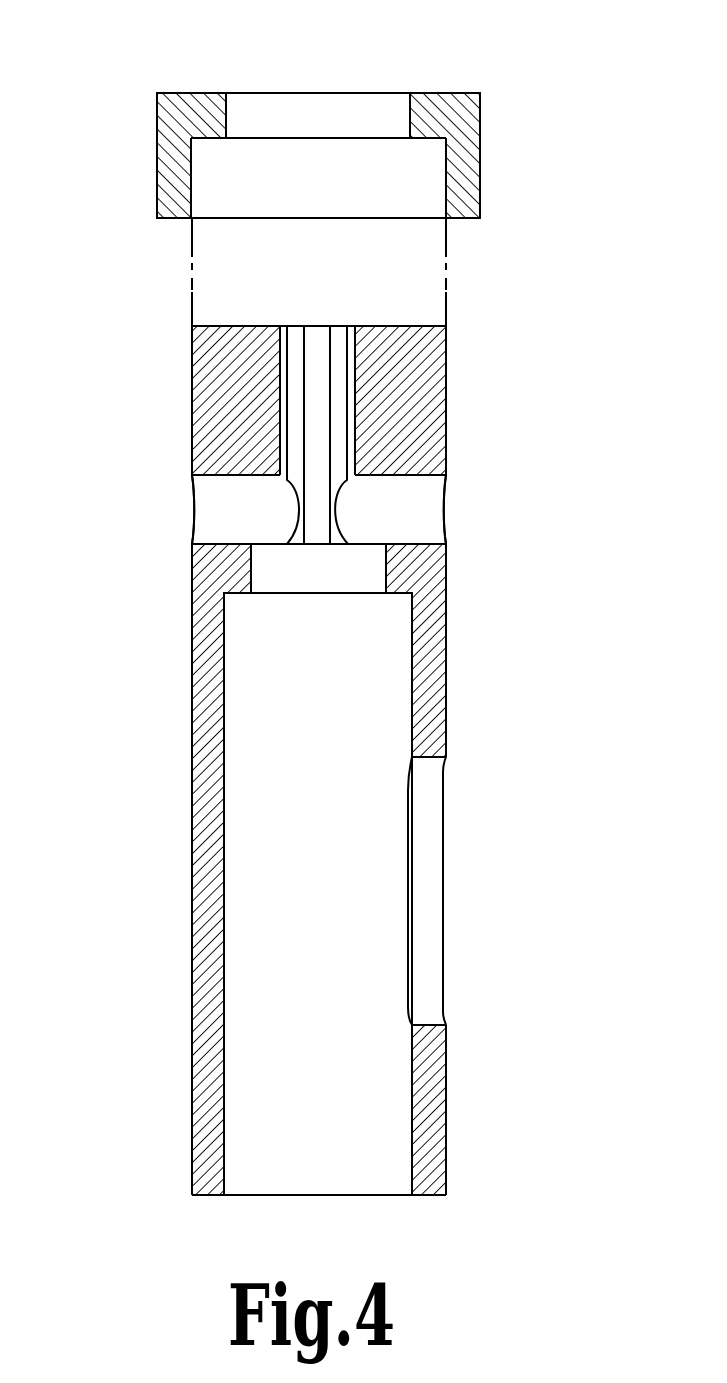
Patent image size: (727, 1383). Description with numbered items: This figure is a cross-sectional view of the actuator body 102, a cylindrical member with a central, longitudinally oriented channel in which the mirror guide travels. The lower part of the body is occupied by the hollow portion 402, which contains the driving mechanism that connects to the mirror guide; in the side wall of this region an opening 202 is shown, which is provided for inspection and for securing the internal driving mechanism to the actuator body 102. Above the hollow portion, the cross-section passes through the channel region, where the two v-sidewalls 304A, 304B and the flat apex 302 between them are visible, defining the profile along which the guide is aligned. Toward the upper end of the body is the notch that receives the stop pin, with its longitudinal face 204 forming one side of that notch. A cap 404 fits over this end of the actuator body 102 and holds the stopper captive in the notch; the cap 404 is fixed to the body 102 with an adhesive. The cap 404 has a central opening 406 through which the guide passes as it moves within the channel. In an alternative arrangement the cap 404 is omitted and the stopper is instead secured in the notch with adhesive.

The actuator body 102 is at (191, 713).
The opening 202 is at (443, 847).
The longitudinal face 204 is at (447, 510).
The flat apex 302 is at (315, 326).
The v-sidewall 304A is at (341, 326).
The v-sidewall 304B is at (296, 326).
The hollow portion 402 is at (333, 977).
The cap 404 is at (480, 132).
The central opening 406 is at (368, 93).